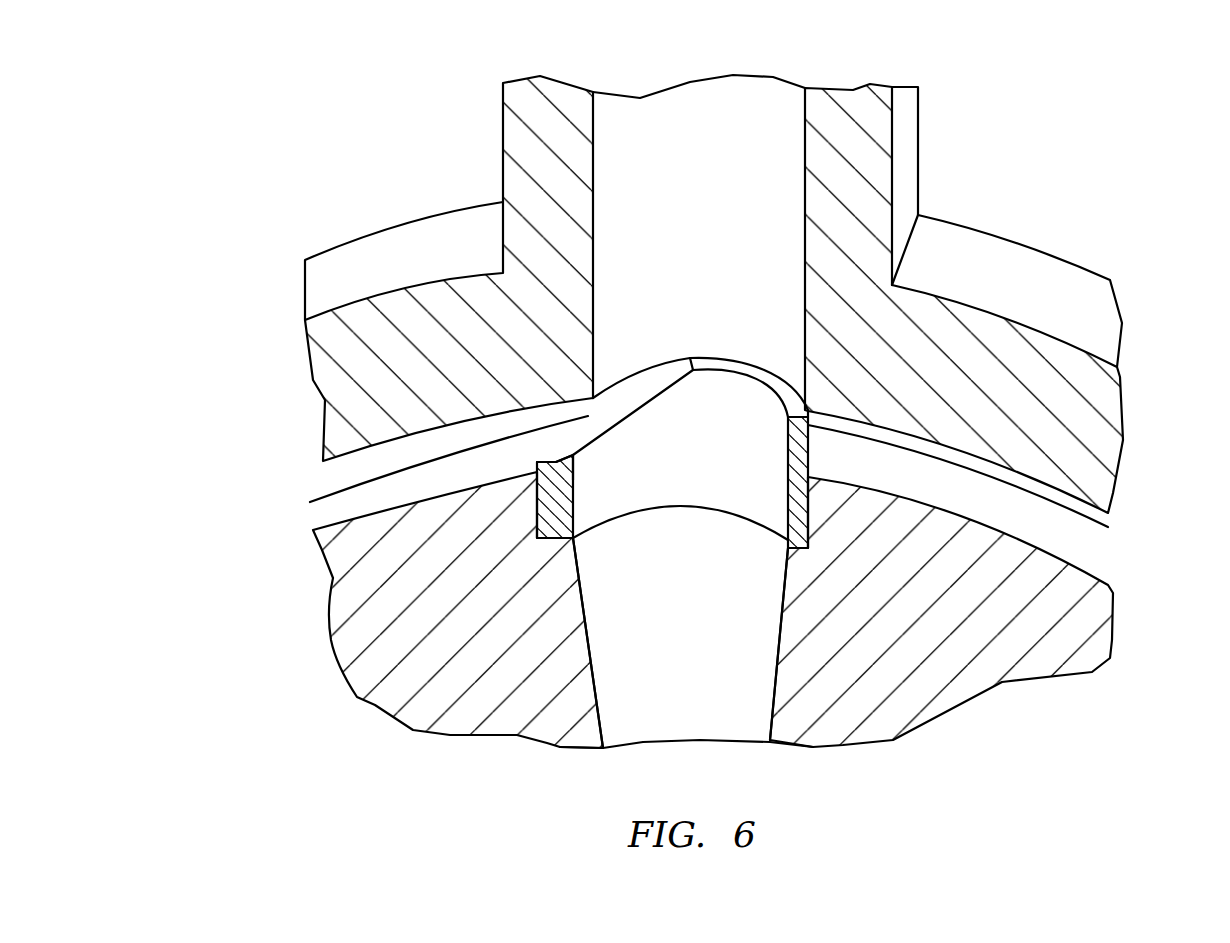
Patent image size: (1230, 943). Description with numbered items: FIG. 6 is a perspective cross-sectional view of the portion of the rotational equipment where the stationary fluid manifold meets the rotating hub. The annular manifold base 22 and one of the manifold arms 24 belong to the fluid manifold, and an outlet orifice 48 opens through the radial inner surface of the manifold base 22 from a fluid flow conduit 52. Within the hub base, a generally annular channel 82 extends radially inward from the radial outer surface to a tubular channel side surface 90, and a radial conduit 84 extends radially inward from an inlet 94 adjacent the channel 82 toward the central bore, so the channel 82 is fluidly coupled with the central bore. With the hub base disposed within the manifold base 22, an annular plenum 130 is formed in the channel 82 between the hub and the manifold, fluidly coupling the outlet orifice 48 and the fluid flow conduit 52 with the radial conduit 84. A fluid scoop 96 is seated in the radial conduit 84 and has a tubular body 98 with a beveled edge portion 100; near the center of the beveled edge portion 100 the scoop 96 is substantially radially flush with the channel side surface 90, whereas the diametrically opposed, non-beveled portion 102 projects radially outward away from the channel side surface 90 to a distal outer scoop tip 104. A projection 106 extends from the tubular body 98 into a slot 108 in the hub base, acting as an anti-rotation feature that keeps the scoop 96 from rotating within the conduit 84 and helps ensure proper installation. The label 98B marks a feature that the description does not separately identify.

The manifold base 22 is at (1031, 262).
The manifold arm 24 is at (910, 118).
The fluid flow conduit 52 is at (690, 127).
The outlet orifice 48 is at (771, 403).
The distal outer scoop tip 104 is at (777, 383).
The beveled edge portion 100 is at (568, 418).
The diametrically opposed portion 102 is at (808, 452).
The slot 108 is at (540, 460).
The second seal surface 98B is at (326, 482).
The annular plenum 130 is at (382, 610).
The channel 82 is at (326, 517).
The projection 106 is at (535, 522).
The inlet 94 is at (808, 517).
The channel side surface 90 is at (1085, 537).
The radial conduit 84 is at (693, 693).
The fluid scoop 96 is at (680, 562).
The tubular body 98 is at (608, 530).